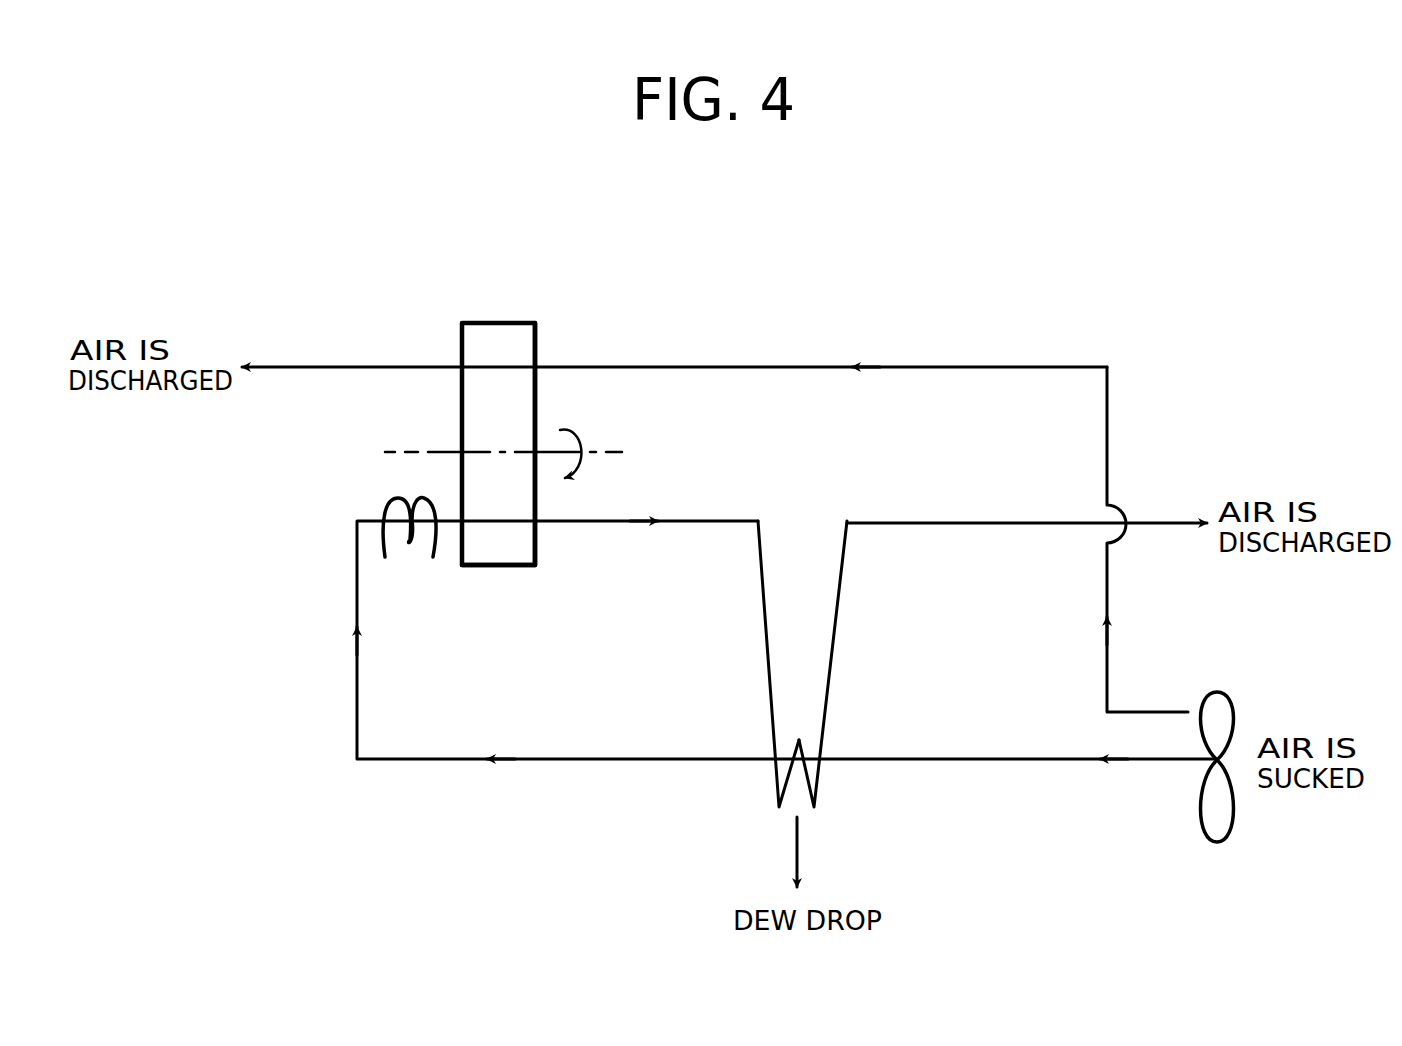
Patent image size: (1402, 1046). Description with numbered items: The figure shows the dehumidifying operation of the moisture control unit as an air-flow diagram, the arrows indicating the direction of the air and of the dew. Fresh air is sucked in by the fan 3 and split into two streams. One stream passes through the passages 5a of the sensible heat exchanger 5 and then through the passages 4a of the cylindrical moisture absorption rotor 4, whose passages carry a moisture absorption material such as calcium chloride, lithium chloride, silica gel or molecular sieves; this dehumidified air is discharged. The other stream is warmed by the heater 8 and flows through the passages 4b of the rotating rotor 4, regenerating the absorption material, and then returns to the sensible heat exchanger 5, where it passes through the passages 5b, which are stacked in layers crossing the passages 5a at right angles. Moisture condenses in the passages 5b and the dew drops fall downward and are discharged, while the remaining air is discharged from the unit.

The fan 3 is at (1216, 812).
The moisture absorption rotor 4 is at (503, 427).
The passages of the moisture absorption rotor 4a is at (505, 522).
The passages of the moisture absorption rotor 4b is at (502, 364).
The sensible heat exchanger 5 is at (875, 719).
The passages of the sensible heat exchanger 5a is at (838, 763).
The passages of the sensible heat exchanger 5b is at (828, 720).
The heater 8 is at (383, 503).